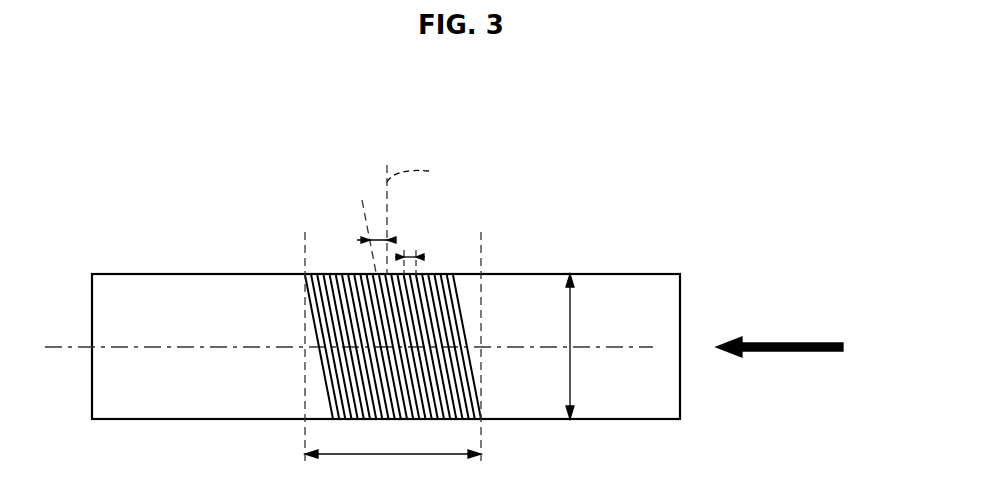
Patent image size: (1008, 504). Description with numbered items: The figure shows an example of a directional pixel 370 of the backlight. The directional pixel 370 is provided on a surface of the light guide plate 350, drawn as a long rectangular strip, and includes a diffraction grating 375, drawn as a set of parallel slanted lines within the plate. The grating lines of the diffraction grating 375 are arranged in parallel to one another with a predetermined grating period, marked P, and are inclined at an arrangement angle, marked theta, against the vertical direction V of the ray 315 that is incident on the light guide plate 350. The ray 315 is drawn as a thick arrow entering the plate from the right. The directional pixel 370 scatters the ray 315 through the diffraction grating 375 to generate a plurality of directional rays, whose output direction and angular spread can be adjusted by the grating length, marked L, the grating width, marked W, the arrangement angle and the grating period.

The directional pixel 370 is at (463, 104).
The light guide plate 350 is at (178, 274).
The diffraction grating 375 is at (340, 274).
The ray 315 is at (791, 343).